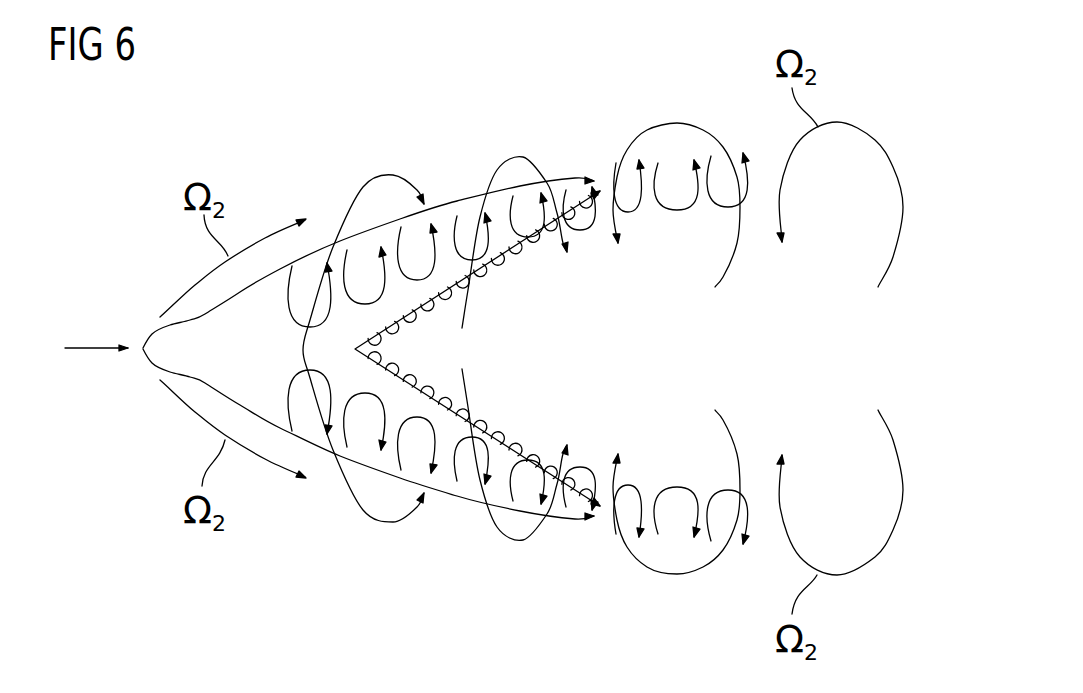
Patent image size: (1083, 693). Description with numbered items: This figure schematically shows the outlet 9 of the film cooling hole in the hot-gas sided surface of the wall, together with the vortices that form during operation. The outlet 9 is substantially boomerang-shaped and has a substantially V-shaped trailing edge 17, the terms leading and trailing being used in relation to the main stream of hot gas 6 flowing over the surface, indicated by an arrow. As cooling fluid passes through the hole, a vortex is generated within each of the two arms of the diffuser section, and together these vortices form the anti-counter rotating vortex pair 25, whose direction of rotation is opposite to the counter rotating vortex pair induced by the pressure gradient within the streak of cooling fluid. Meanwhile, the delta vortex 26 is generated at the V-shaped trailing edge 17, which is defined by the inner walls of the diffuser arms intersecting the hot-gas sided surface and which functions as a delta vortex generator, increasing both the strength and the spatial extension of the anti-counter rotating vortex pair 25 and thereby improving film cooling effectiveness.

The hot gas 6 is at (88, 346).
The outlet 9 is at (319, 233).
The V-shaped trailing edge 17 is at (417, 382).
The anti-counter rotating vortex pair 25 is at (289, 303).
The delta vortex 26 is at (513, 260).